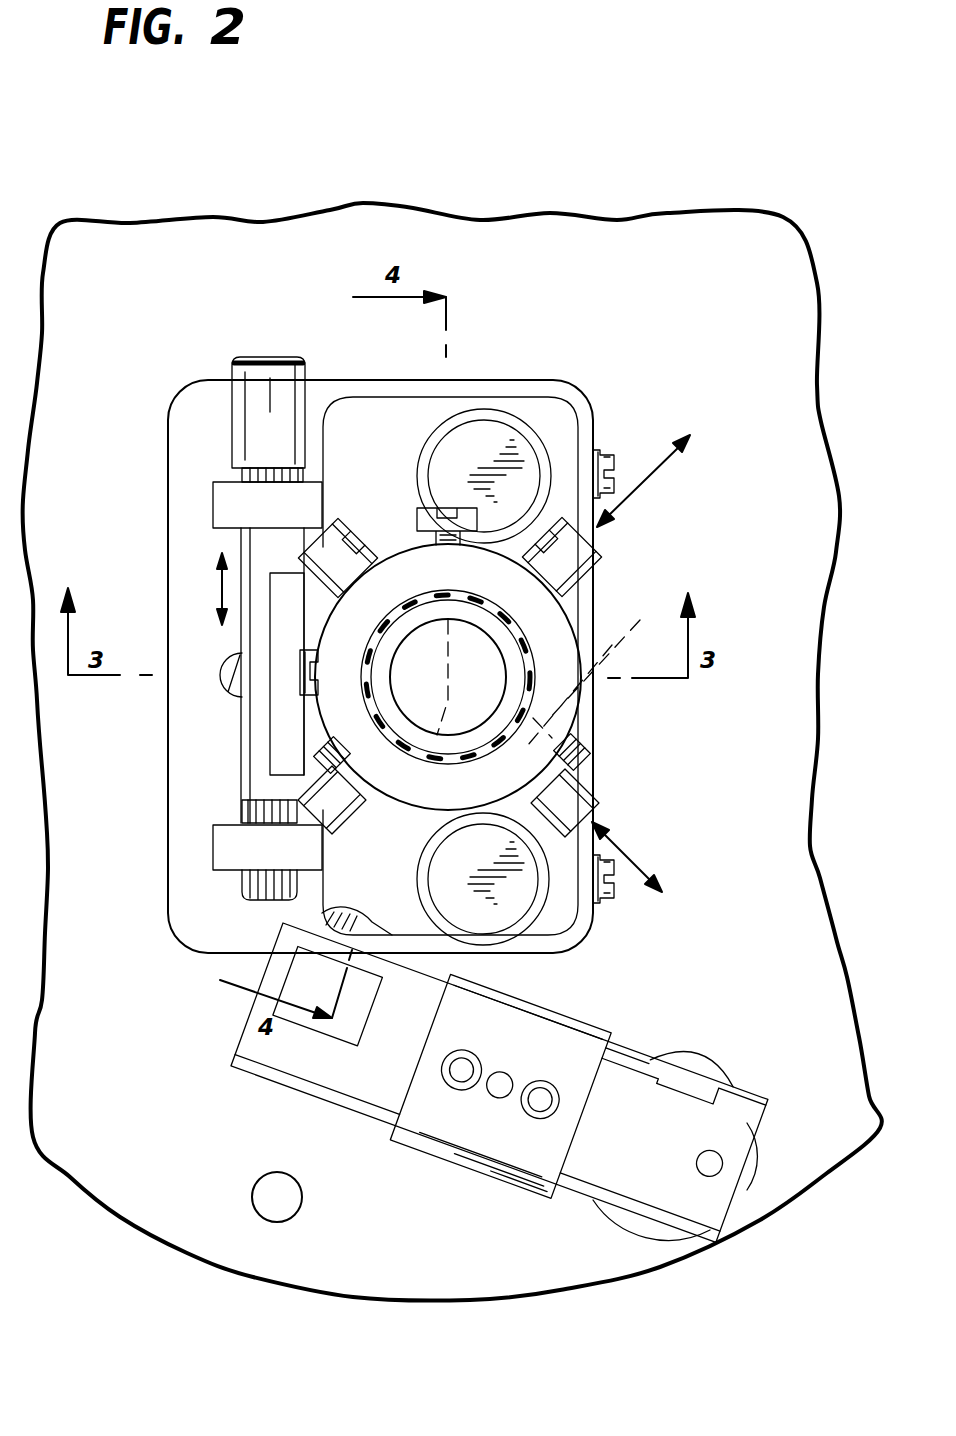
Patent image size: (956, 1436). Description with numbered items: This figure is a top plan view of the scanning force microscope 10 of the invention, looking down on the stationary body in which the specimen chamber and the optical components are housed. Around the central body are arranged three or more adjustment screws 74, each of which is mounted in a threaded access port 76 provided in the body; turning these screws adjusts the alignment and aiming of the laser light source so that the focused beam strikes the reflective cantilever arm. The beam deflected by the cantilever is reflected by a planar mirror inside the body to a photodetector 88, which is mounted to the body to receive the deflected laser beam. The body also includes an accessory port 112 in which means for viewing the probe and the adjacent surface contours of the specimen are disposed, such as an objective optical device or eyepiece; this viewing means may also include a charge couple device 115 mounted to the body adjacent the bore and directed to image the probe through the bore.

The scanning force microscope 10 is at (672, 332).
The adjustment screws 74 is at (420, 507).
The threaded access ports 76 is at (587, 671).
The photodetector 88 is at (287, 714).
The accessory port 112 is at (372, 922).
The charge couple device 115 is at (255, 1112).